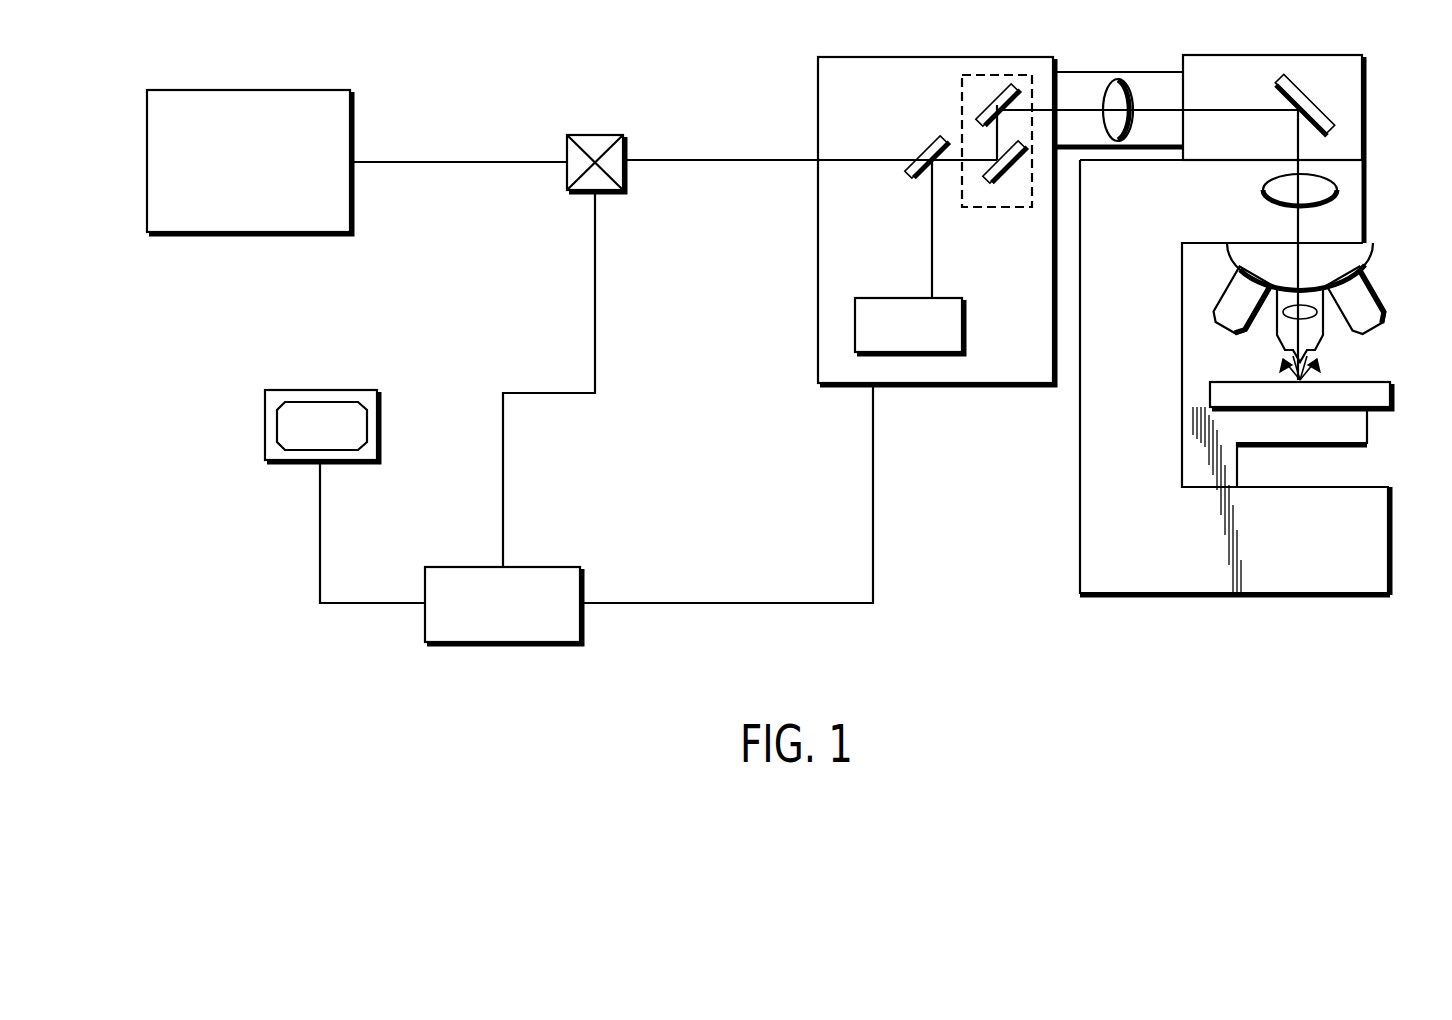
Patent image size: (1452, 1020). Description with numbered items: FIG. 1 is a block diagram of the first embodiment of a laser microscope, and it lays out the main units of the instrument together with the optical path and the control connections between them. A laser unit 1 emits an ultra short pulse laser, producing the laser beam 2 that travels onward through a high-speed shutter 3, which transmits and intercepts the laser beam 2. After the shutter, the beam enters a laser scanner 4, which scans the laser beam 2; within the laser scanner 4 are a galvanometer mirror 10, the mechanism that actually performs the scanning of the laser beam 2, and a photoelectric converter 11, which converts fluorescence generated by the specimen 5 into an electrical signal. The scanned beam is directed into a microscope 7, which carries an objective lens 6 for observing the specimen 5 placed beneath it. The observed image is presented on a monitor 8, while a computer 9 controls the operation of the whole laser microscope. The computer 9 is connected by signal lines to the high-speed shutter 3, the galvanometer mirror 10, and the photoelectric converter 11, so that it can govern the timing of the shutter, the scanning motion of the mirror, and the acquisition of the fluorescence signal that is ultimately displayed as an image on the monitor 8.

The laser unit 1 is at (248, 90).
The laser beam 2 is at (462, 160).
The high-speed shutter 3 is at (591, 135).
The laser scanner 4 is at (865, 57).
The specimen 5 is at (1320, 378).
The objective lens 6 is at (1330, 293).
The microscope 7 is at (1366, 201).
The monitor 8 is at (265, 426).
The computer 9 is at (504, 644).
The galvanometer mirror 10 is at (1000, 75).
The photoelectric converter 11 is at (964, 322).